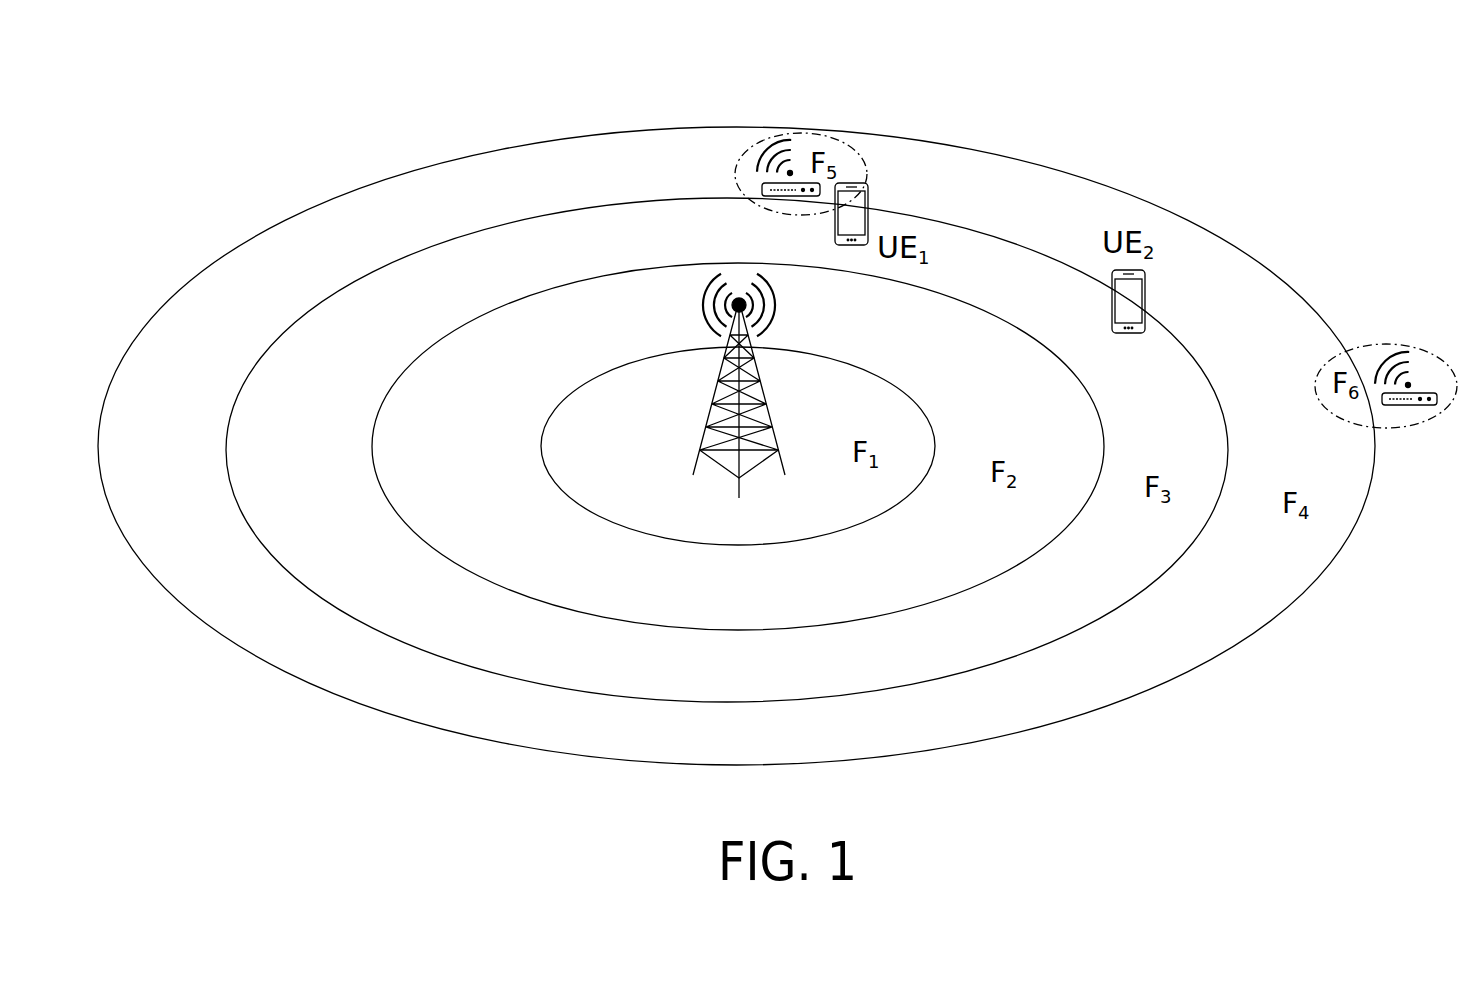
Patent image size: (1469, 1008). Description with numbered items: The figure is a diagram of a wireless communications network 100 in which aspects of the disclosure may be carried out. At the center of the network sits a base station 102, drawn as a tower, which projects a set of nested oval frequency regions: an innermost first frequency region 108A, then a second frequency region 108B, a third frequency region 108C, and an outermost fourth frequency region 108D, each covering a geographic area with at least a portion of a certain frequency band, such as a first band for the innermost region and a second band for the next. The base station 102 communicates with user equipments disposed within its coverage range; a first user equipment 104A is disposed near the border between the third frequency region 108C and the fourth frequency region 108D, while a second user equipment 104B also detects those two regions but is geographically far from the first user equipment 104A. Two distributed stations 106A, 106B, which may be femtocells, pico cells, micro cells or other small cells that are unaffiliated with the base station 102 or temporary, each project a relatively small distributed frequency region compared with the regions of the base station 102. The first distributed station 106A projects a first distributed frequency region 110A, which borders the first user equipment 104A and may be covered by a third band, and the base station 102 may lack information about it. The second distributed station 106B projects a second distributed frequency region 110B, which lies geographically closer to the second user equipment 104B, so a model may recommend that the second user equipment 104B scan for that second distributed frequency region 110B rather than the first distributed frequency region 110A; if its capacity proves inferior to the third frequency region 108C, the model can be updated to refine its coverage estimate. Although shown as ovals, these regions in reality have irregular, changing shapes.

The wireless communications network 100 is at (203, 110).
The base station 102 is at (703, 305).
The UE1 104A is at (860, 189).
The UE2 104B is at (1147, 294).
The distributed station 106A is at (762, 160).
The distributed station 106B is at (1400, 353).
The frequency region F1 108A is at (738, 446).
The frequency region F2 108B is at (738, 446).
The frequency region F3 108C is at (727, 450).
The frequency region F4 108D is at (736, 446).
The distributed frequency region F5 110A is at (742, 178).
The distributed frequency region F6 110B is at (1370, 355).